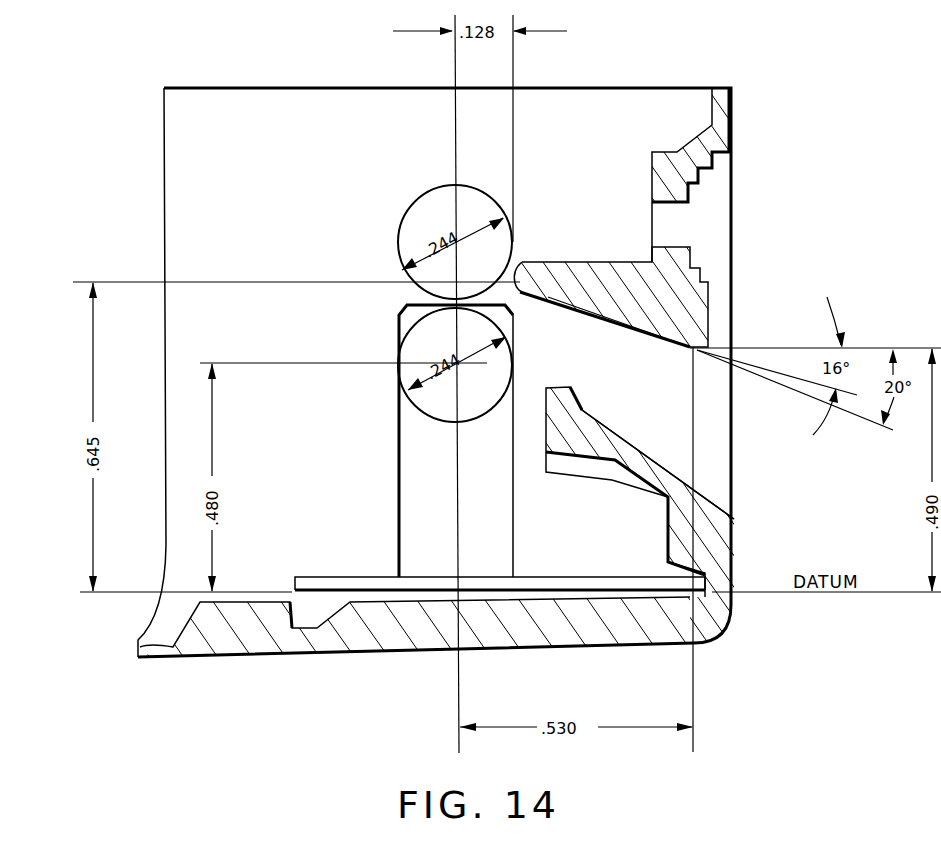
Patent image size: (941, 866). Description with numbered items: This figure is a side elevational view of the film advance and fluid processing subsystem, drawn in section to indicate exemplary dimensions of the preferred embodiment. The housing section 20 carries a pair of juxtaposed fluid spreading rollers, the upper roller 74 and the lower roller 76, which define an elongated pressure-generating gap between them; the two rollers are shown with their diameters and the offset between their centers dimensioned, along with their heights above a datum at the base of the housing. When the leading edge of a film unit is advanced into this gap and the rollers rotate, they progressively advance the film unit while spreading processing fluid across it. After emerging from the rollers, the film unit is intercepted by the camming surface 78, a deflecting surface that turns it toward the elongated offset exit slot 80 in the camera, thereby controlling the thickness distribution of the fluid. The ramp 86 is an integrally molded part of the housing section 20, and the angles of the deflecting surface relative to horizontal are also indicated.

The housing section 20 is at (740, 532).
The upper fluid spreading roller 74 is at (428, 200).
The lower fluid spreading roller 76 is at (428, 398).
The camming surface 78 is at (568, 304).
The exit slot 80 is at (656, 420).
The ramp 86 is at (597, 317).